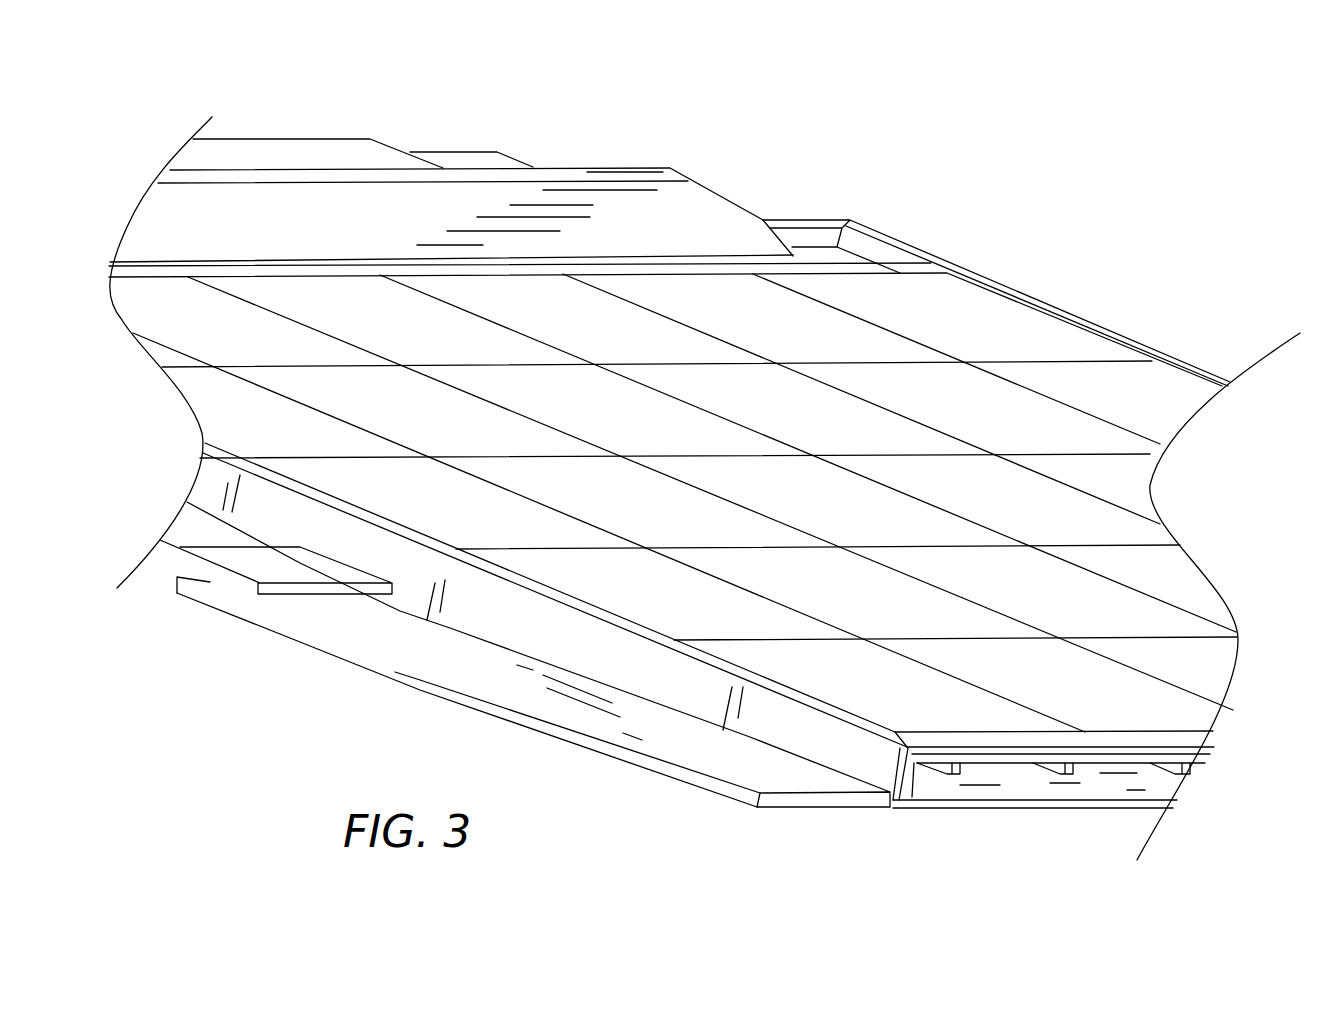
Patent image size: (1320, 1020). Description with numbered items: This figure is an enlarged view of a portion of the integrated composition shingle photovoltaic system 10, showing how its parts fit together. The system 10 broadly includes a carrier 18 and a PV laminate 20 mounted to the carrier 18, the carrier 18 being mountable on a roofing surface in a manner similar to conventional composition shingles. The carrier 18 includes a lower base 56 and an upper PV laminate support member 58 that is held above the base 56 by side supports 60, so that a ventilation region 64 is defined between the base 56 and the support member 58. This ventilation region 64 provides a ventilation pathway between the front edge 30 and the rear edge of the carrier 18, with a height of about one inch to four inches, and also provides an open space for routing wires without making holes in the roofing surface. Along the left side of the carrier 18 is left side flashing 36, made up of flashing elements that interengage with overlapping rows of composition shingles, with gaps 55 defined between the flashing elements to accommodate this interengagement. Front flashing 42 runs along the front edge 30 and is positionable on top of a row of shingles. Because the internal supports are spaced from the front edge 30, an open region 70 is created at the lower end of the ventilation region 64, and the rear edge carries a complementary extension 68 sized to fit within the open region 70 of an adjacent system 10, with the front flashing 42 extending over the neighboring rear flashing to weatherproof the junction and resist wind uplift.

The integrated composition shingle photovoltaic (PV) system 10 is at (993, 210).
The carrier 18 is at (533, 641).
The PV laminate 20 is at (1007, 348).
The front edge 30 is at (1160, 745).
The left side flashing 36 is at (483, 672).
The front flashing 42 is at (1095, 805).
The gaps 55 is at (225, 588).
The lower base 56 is at (1030, 785).
The upper PV laminate support member 58 is at (1143, 757).
The side supports 60 is at (902, 785).
The ventilation region 64 is at (978, 783).
The extension 68 is at (568, 176).
The open region 70 is at (932, 787).